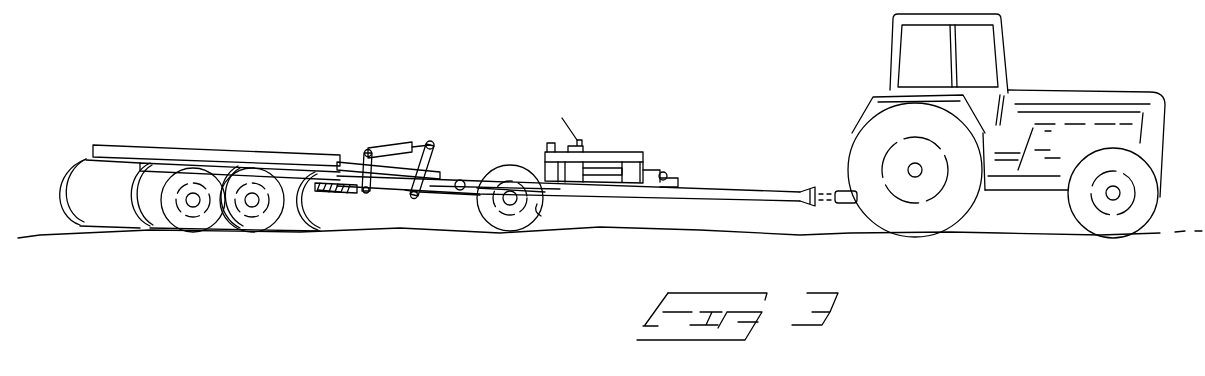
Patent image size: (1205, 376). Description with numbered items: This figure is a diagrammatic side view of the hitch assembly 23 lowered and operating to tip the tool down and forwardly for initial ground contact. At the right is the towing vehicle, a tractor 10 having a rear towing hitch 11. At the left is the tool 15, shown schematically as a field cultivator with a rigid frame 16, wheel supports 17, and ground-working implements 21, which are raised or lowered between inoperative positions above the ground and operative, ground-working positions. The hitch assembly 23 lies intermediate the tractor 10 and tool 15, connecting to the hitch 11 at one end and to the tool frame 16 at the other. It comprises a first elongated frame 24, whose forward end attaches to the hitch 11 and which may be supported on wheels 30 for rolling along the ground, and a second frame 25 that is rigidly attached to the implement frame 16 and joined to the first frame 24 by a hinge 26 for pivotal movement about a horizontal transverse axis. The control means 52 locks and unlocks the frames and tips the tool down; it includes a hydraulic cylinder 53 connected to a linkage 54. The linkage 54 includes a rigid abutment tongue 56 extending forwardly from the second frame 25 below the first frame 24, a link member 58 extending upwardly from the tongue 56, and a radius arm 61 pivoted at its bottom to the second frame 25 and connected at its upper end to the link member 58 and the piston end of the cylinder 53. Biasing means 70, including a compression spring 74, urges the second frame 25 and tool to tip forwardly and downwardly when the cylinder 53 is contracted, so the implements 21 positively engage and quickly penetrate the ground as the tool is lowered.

The tractor 10 is at (1055, 82).
The rear towing hitch 11 is at (843, 208).
The tool 15 is at (276, 151).
The rigid frame 16 is at (203, 152).
The wheel supports 17 is at (212, 224).
The ground-working implements 21 is at (128, 192).
The hitch assembly 23 is at (502, 149).
The first elongated frame 24 is at (731, 185).
The second frame 25 is at (352, 164).
The hinge 26 is at (510, 198).
The wheels 30 is at (550, 209).
The control means 52 is at (456, 130).
The hydraulic cylinder 53 is at (400, 147).
The linkage 54 is at (394, 196).
The abutment tongue 56 is at (436, 198).
The link member 58 is at (422, 165).
The radius arm 61 is at (438, 161).
The biasing means 70 is at (336, 194).
The compression spring 74 is at (348, 194).